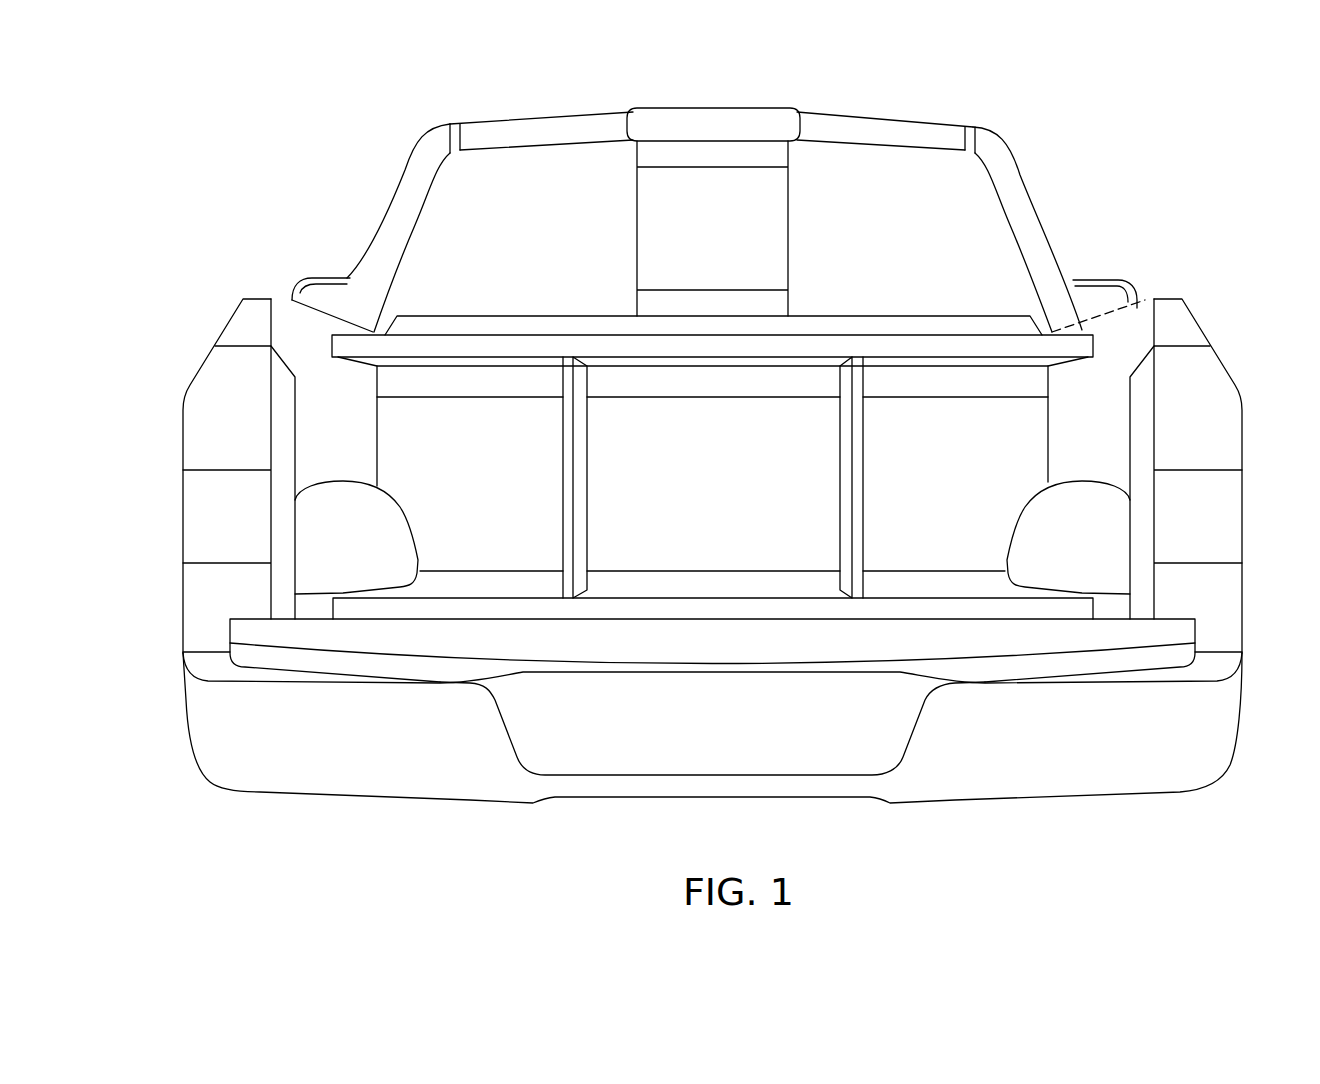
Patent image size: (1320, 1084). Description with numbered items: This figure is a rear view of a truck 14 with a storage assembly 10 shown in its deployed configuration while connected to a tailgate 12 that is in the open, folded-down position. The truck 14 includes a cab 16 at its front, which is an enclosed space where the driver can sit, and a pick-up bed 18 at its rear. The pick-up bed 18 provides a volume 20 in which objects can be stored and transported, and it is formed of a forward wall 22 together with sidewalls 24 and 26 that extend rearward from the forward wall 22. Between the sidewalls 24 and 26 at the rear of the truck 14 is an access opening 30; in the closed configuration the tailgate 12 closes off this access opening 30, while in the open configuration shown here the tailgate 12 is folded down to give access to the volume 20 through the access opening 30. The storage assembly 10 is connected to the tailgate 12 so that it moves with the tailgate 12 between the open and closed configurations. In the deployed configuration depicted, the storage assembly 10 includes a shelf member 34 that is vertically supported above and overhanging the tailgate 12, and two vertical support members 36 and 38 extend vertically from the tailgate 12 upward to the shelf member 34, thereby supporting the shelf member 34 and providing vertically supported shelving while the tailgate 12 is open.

The storage assembly 10 is at (1084, 319).
The tailgate 12 is at (396, 642).
The truck 14 is at (312, 196).
The cab 16 is at (862, 112).
The pick-up bed 18 is at (310, 474).
The volume 20 is at (690, 557).
The forward wall 22 is at (557, 325).
The sidewall 24 is at (292, 305).
The sidewall 26 is at (1124, 308).
The access opening 30 is at (1115, 474).
The shelf member 34 is at (878, 336).
The vertical support member 36 is at (578, 501).
The vertical support member 38 is at (845, 468).